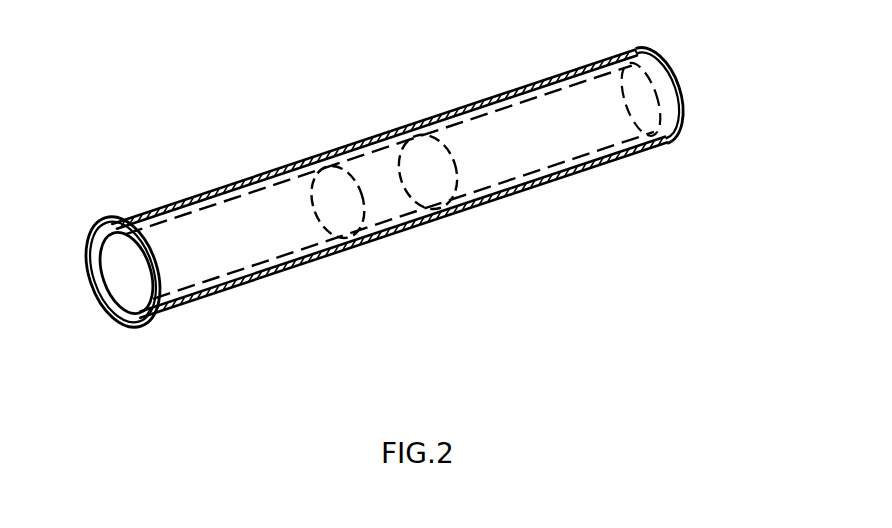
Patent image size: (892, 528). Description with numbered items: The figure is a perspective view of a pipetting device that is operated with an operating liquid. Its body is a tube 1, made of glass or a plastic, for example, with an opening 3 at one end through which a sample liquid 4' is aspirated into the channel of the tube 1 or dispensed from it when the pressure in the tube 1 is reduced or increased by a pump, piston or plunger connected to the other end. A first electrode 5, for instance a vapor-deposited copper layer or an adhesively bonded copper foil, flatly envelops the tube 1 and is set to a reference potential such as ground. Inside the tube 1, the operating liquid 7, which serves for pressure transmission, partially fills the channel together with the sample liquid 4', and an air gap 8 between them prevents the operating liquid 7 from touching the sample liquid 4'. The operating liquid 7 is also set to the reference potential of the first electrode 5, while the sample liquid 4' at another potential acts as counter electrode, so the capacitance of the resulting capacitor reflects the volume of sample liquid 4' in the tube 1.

The tube 1 is at (533, 93).
The opening 3 is at (122, 283).
The sample liquid 4' is at (378, 150).
The first electrode 5 is at (547, 185).
The operating liquid 7 is at (585, 142).
The air gap 8 is at (387, 202).